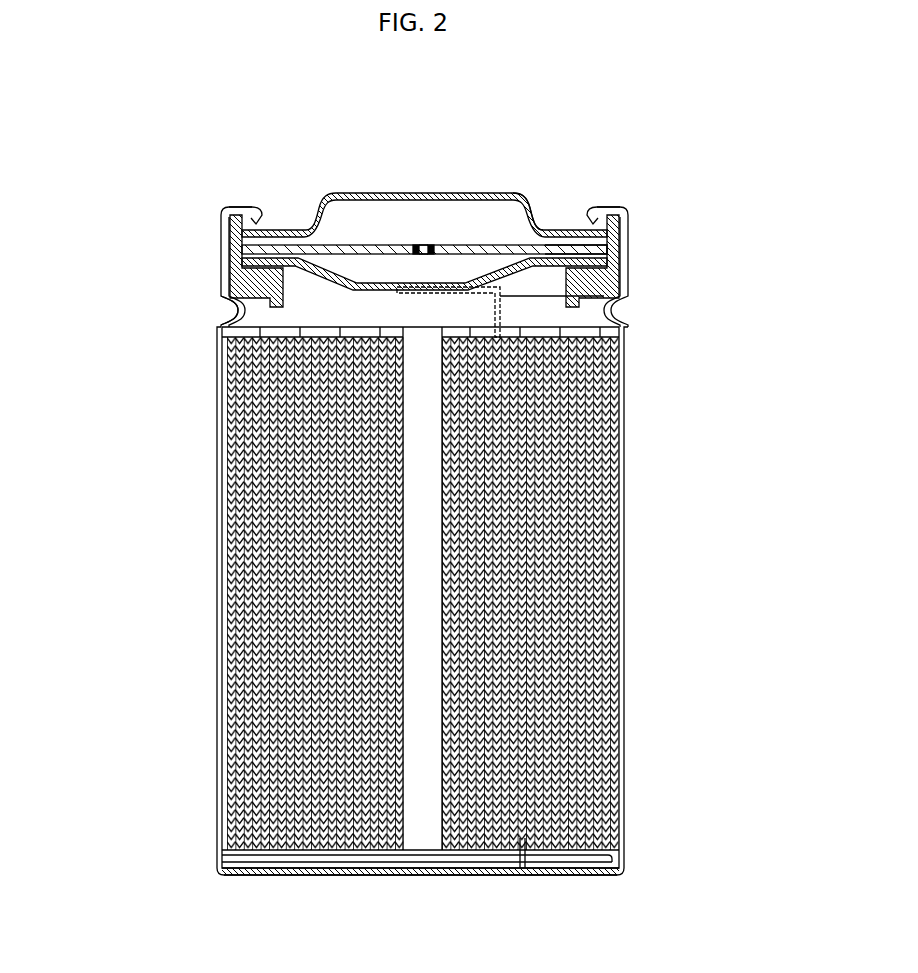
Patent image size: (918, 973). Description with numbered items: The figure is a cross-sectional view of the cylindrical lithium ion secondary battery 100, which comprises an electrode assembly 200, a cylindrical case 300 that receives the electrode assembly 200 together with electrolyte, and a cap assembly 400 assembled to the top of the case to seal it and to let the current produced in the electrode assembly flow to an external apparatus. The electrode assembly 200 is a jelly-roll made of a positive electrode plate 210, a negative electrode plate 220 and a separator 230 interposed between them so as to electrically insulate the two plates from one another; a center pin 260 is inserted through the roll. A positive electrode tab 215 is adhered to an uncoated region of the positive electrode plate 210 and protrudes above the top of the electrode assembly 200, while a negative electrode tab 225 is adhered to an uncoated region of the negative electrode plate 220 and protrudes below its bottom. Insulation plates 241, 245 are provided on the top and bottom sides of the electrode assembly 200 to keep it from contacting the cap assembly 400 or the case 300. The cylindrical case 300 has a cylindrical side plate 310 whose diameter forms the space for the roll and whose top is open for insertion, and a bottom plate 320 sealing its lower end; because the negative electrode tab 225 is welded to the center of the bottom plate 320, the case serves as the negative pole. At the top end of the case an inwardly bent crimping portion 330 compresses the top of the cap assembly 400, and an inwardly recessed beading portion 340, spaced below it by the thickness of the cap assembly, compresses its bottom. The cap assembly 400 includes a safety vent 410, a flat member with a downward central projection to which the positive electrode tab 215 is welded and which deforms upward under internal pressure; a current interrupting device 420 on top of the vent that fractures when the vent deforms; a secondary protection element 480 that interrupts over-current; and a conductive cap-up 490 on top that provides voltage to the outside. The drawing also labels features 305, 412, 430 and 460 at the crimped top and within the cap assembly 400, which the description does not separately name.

The cylindrical lithium ion secondary battery 100 is at (668, 167).
The electrode assembly 200 is at (748, 298).
The positive electrode plate 210 is at (624, 460).
The positive electrode tab 215 is at (629, 313).
The negative electrode plate 220 is at (624, 379).
The negative electrode tab 225 is at (513, 873).
The separator 230 is at (624, 425).
The insulation plate 241 is at (621, 330).
The insulation plate 245 is at (607, 866).
The center pin 260 is at (363, 850).
The cylindrical case 300 is at (97, 285).
The crimping portion 305 is at (243, 204).
The cylindrical side plate 310 is at (222, 371).
The bottom plate 320 is at (240, 878).
The crimping portion 330 is at (222, 245).
The beading portion 340 is at (221, 309).
The cap assembly 400 is at (545, 108).
The safety vent 410 is at (366, 243).
The cap plate edge 412 is at (555, 243).
The current interrupting device 420 is at (493, 259).
The insulating member 430 is at (440, 250).
The current interrupt device 460 is at (417, 245).
The secondary protection element 480 is at (531, 207).
The cap-up 490 is at (350, 193).